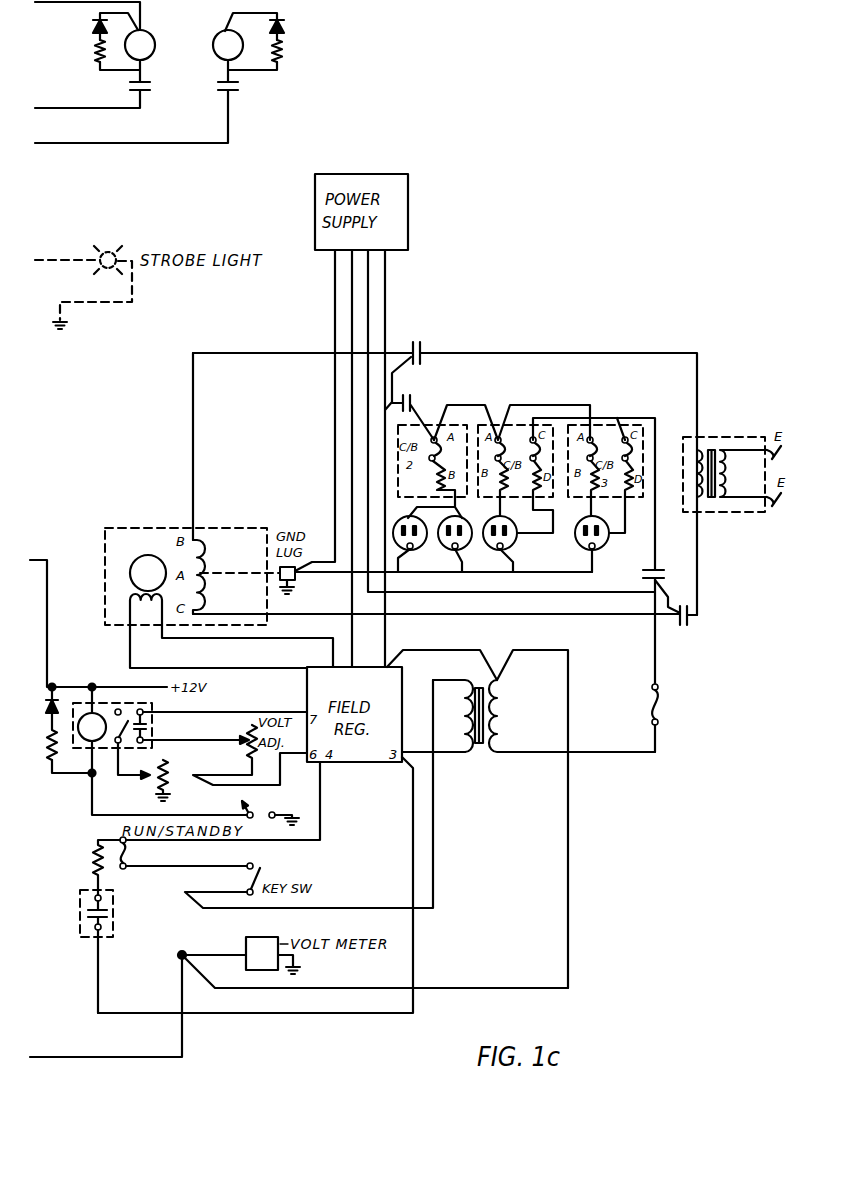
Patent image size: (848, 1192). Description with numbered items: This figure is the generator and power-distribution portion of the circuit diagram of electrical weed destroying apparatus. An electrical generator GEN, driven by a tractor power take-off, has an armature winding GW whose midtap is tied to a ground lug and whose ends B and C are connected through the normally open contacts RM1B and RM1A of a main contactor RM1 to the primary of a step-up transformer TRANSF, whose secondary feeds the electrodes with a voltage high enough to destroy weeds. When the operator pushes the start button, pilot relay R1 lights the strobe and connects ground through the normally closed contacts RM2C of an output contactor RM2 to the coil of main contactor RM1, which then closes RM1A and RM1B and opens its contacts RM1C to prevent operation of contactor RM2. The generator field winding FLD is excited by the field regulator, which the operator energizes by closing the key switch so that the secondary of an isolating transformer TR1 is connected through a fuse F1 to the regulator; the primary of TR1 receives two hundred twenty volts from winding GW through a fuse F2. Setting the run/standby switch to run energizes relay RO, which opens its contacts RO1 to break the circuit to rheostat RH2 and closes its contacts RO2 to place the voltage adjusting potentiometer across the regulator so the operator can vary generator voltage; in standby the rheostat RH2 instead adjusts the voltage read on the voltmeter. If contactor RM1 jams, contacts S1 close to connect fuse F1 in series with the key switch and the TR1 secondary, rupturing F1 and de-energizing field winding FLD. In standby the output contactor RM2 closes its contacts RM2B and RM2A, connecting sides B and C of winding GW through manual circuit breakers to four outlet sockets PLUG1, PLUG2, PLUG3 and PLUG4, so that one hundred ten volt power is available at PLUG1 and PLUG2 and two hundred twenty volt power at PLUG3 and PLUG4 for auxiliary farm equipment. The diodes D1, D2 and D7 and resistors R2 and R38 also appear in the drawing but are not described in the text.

The diode D1 is at (94, 27).
The pilot relay R1 is at (96, 49).
The output contactor RM2 is at (151, 37).
The main contactor RM1 is at (219, 52).
The contacts of main contactor RM1 RM1C is at (146, 93).
The normally closed contacts of output contactor RM2 RM2C is at (235, 93).
The diode D2 is at (286, 27).
The resistor R2 is at (284, 52).
The normally open contacts of main contactor RM1 RM1B is at (420, 347).
The contacts of output contactor RM2 RM2B is at (414, 402).
The electrical generator GEN is at (148, 573).
The armature winding GW is at (206, 556).
The field winding FLD is at (231, 631).
The outlet socket PLUG1 is at (409, 544).
The outlet socket PLUG2 is at (470, 544).
The outlet socket PLUG3 is at (524, 544).
The outlet socket PLUG4 is at (605, 544).
The contacts of output contactor RM2 RM2A is at (650, 580).
The normally open contacts of main contactor RM1 RM1A is at (686, 626).
The step-up transformer TRANSF is at (711, 436).
The isolating transformer TR1 is at (482, 688).
The fuse F2 is at (660, 704).
The diode D7 is at (60, 694).
The relay RO is at (112, 725).
The contacts of relay RO RO1 is at (118, 708).
The contacts of relay RO RO2 is at (142, 708).
The rheostat RH2 is at (155, 787).
The fuse F1 is at (129, 853).
The resistor R38 is at (94, 856).
The contacts S1 is at (103, 925).